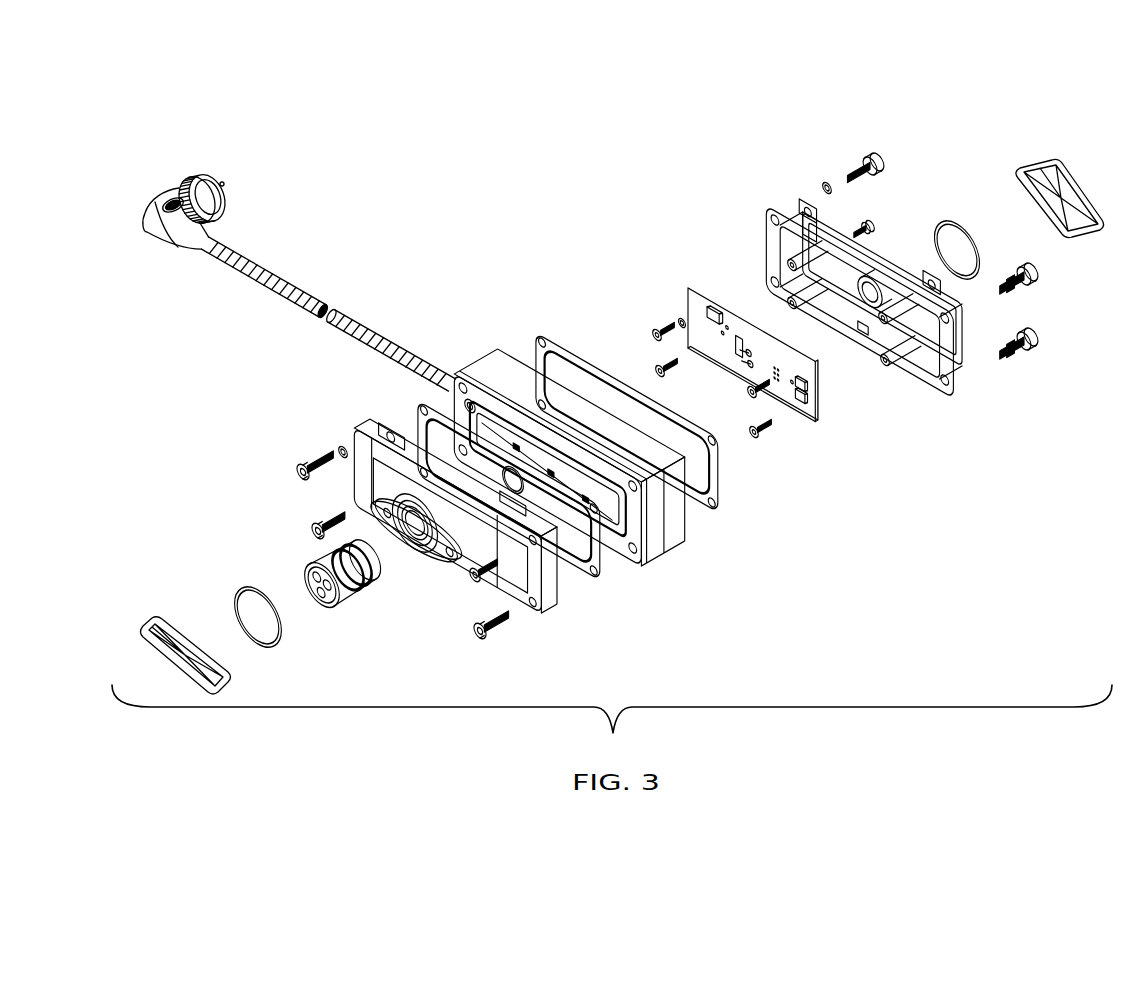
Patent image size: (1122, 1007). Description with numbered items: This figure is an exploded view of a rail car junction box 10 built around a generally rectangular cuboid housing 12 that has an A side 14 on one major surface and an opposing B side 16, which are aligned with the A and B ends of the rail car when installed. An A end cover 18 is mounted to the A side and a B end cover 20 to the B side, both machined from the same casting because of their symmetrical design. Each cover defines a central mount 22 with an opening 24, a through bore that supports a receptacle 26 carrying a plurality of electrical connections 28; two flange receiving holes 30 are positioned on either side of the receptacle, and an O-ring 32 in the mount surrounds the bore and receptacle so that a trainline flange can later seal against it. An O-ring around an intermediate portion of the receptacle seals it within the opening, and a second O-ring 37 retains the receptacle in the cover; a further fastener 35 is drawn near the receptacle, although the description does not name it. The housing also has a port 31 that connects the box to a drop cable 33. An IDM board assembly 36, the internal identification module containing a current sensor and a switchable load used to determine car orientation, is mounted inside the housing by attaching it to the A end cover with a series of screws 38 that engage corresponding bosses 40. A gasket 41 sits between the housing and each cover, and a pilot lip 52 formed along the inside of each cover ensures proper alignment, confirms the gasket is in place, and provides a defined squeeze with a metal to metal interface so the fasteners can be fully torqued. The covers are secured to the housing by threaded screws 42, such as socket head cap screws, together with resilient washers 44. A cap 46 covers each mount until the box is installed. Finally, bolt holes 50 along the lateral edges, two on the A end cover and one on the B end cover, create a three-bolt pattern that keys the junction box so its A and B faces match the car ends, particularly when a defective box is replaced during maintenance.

The junction box 10 is at (622, 396).
The housing 12 is at (555, 441).
The A side 14 is at (895, 288).
The B side 16 is at (299, 301).
The A end cover 18 is at (875, 312).
The B end cover 20 is at (440, 498).
The central mount 22 is at (417, 561).
The opening 24 is at (408, 522).
The receptacle 26 is at (367, 590).
The electrical connections 28 is at (326, 603).
The flange receiving holes 30 is at (443, 568).
The port 31 is at (453, 380).
The O-ring 32 is at (246, 590).
The drop cable 33 is at (243, 257).
The screw 35 is at (330, 562).
The IDM board assembly 36 is at (820, 422).
The second O-ring 37 is at (596, 570).
The screws 38 is at (765, 431).
The bosses 40 is at (897, 358).
The gasket 41 is at (416, 414).
The threaded screws 42 is at (503, 624).
The resilient washers 44 is at (825, 184).
The cap 46 is at (182, 618).
The bolt holes 50 is at (386, 424).
The pilot lip 52 is at (792, 228).